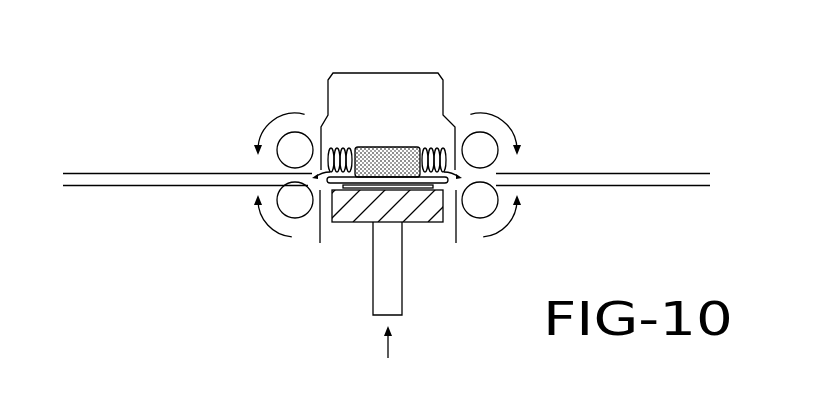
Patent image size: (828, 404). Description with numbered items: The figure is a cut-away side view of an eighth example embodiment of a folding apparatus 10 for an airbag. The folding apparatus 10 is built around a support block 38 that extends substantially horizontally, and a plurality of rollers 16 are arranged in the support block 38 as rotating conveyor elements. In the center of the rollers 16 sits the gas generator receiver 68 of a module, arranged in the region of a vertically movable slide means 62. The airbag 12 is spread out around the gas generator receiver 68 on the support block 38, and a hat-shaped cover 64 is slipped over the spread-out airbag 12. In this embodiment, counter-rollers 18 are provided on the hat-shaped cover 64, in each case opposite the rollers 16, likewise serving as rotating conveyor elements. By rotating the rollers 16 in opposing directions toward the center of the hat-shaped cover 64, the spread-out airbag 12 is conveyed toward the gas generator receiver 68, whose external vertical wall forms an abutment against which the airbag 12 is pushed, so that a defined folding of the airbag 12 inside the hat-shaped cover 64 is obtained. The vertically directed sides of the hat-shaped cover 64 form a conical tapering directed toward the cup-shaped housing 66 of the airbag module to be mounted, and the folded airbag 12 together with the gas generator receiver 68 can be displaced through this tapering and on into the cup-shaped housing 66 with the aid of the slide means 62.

The folding apparatus 10 is at (700, 126).
The airbag 12 is at (343, 134).
The rollers 16 is at (300, 218).
The counter-rollers 18 is at (298, 131).
The support block 38 is at (165, 186).
The slide means 62 is at (402, 262).
The hat-shaped cover 64 is at (130, 173).
The cup-shaped housing 66 is at (373, 73).
The gas generator receiver 68 is at (386, 148).